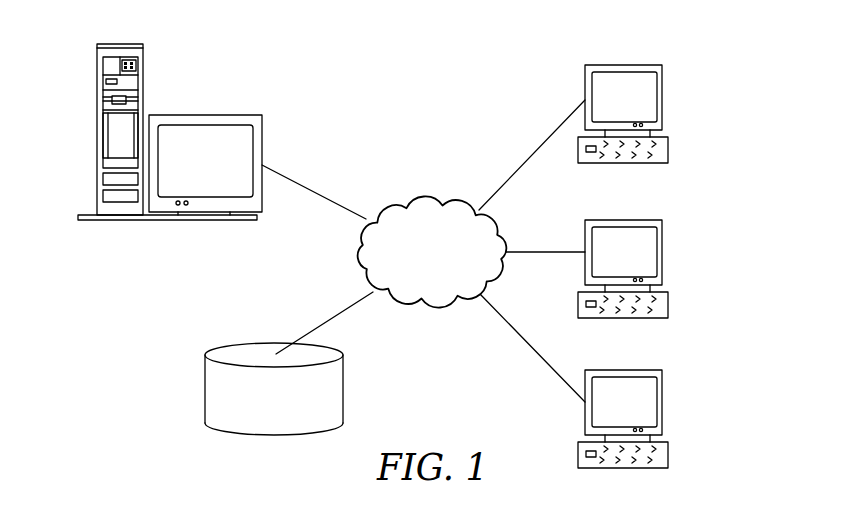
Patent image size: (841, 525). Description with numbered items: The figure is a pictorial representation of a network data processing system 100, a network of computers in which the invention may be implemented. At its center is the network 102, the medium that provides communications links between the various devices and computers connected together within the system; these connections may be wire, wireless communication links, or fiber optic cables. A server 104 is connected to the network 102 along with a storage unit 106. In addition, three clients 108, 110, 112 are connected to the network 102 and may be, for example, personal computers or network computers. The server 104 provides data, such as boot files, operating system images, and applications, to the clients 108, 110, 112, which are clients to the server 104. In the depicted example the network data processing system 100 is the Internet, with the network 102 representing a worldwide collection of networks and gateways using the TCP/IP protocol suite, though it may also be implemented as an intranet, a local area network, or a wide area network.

The network data processing system 100 is at (486, 77).
The network 102 is at (401, 200).
The server 104 is at (97, 133).
The storage unit 106 is at (205, 388).
The client 108 is at (663, 99).
The client 110 is at (663, 253).
The client 112 is at (663, 402).